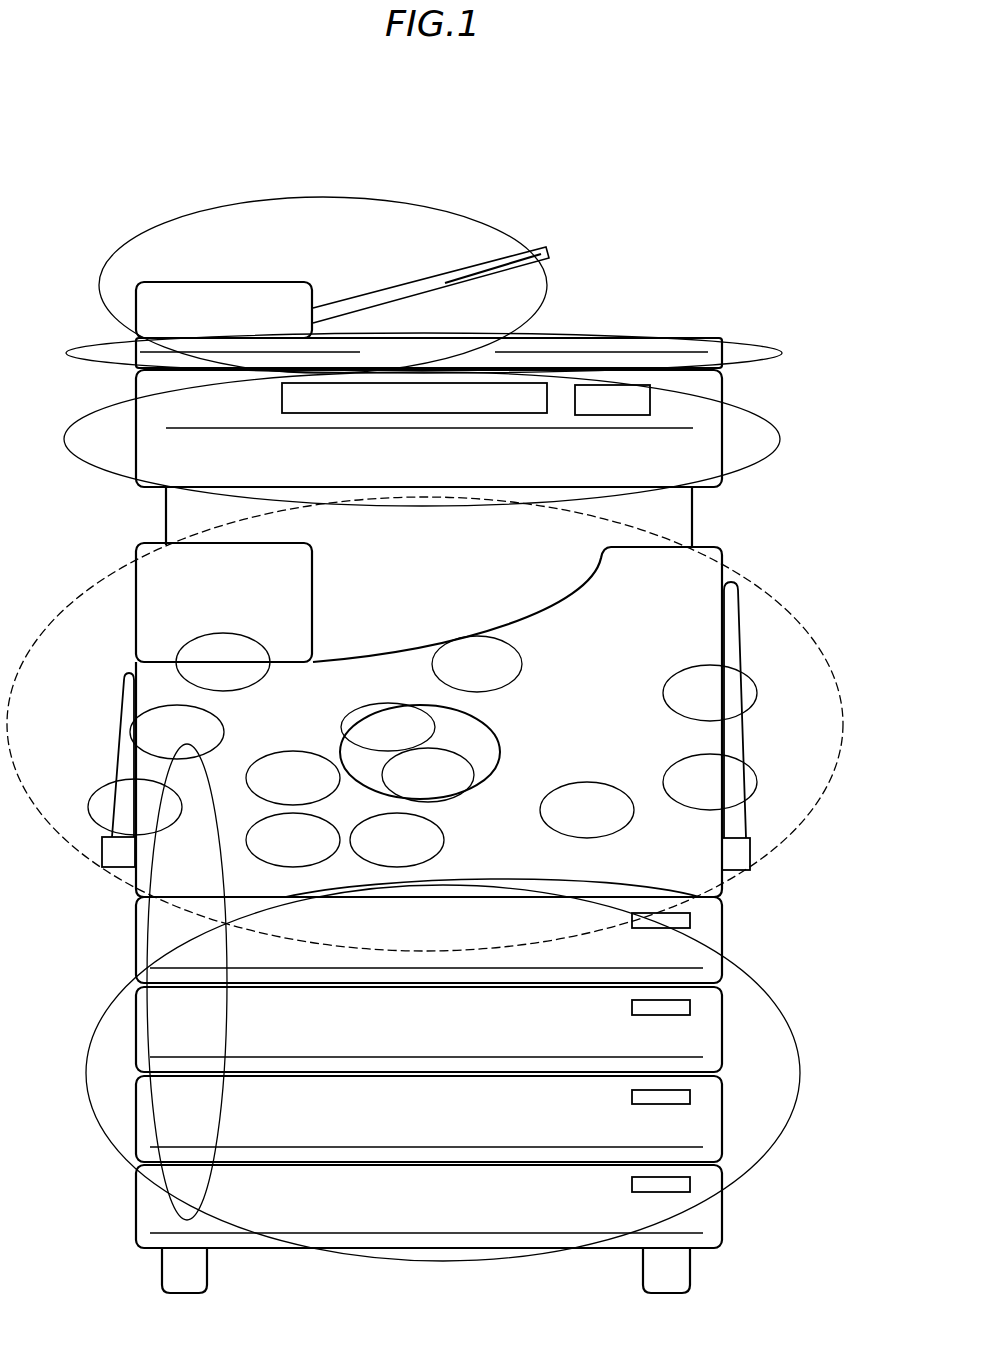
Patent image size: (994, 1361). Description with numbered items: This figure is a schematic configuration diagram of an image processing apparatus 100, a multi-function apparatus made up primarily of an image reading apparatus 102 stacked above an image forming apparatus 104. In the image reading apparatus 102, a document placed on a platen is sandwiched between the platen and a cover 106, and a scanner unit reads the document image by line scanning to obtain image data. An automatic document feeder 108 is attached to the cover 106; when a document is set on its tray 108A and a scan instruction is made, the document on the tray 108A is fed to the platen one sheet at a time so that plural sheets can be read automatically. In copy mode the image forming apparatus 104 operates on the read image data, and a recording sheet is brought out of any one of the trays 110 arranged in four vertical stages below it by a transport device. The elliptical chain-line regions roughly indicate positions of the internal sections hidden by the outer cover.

The image processing apparatus 100 is at (665, 186).
The image reading apparatus 102 is at (578, 466).
The image forming apparatus 104 is at (611, 654).
The cover 106 is at (622, 348).
The automatic document feeder 108 is at (224, 297).
The tray 108A is at (393, 292).
The trays 110 is at (707, 932).